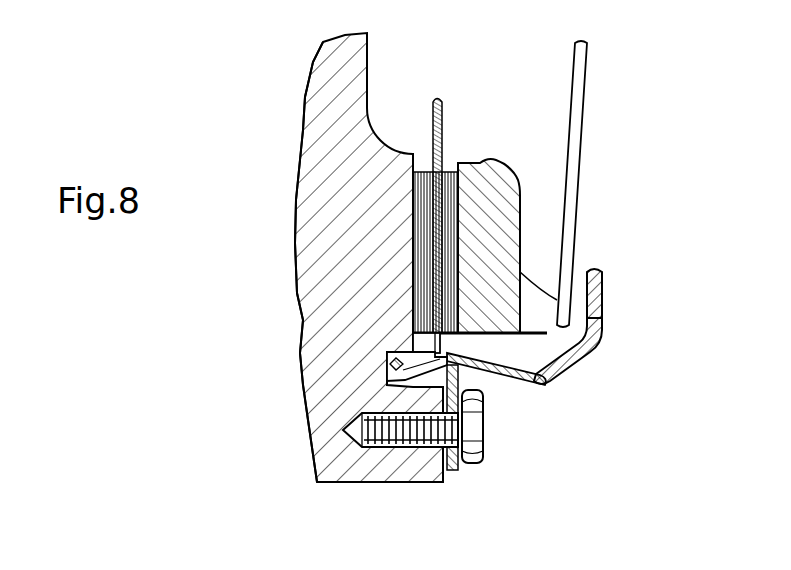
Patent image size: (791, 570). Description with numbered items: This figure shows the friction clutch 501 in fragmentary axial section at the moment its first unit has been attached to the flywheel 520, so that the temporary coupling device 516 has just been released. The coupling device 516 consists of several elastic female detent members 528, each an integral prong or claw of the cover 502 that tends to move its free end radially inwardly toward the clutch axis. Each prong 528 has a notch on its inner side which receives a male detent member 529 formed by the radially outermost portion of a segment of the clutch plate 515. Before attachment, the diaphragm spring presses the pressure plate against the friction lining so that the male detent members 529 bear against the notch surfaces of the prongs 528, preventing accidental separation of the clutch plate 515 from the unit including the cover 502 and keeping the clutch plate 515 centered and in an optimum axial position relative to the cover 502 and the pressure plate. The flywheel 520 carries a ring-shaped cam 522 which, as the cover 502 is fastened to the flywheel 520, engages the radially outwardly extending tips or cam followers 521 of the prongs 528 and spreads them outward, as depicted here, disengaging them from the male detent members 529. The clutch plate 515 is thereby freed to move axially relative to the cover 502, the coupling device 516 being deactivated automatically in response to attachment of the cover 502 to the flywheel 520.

The friction clutch 501 is at (682, 276).
The cover 502 is at (688, 328).
The clutch plate 515 is at (470, 197).
The coupling device 516 is at (572, 381).
The flywheel 520 is at (295, 257).
The cam follower 521 is at (333, 459).
The ring-shaped cam 522 is at (246, 262).
The elastic female detent member 528 is at (533, 411).
The male detent member 529 is at (413, 345).